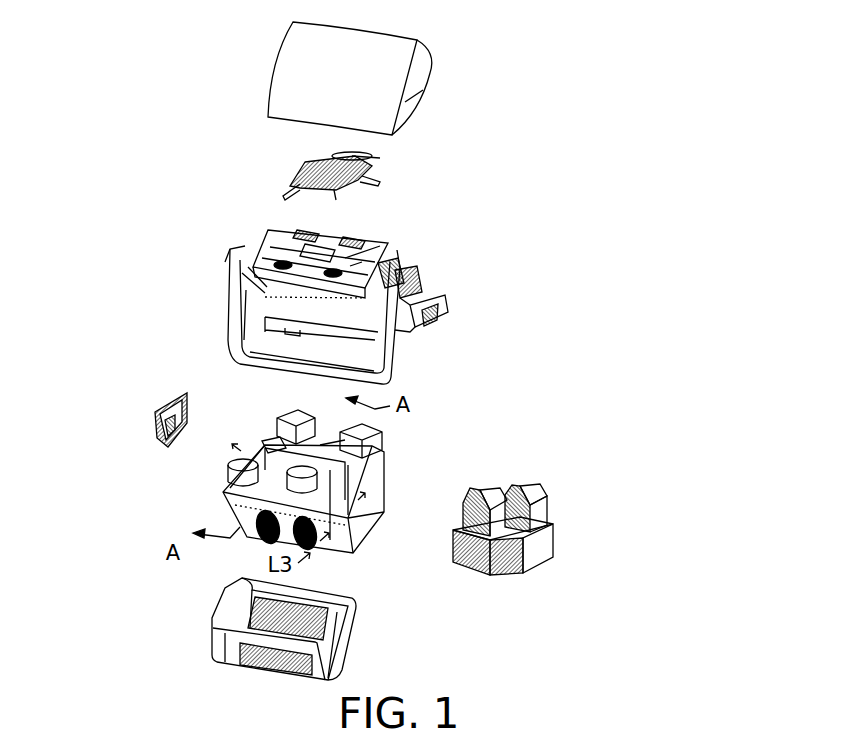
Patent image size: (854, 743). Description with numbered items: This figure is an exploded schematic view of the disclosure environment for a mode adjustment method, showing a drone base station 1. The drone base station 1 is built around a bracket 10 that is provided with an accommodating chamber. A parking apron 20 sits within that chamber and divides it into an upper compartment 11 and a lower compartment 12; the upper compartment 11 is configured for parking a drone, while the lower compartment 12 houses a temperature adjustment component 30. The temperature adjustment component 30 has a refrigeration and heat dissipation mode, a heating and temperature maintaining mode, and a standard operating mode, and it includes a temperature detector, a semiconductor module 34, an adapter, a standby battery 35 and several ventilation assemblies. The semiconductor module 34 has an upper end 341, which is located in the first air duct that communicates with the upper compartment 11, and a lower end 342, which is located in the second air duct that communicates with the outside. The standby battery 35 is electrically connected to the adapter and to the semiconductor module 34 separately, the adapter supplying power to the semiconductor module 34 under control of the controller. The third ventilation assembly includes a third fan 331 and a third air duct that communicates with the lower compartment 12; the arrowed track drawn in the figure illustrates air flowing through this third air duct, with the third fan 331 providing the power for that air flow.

The drone base station 1 is at (578, 95).
The bracket 10 is at (402, 297).
The upper compartment 11 is at (360, 213).
The lower compartment 12 is at (305, 300).
The parking apron 20 is at (278, 249).
The temperature adjustment component 30 is at (377, 479).
The third fan 331 is at (268, 441).
The semiconductor module 34 is at (569, 529).
The upper end 341 is at (533, 512).
The lower end 342 is at (538, 548).
The standby battery 35 is at (158, 422).